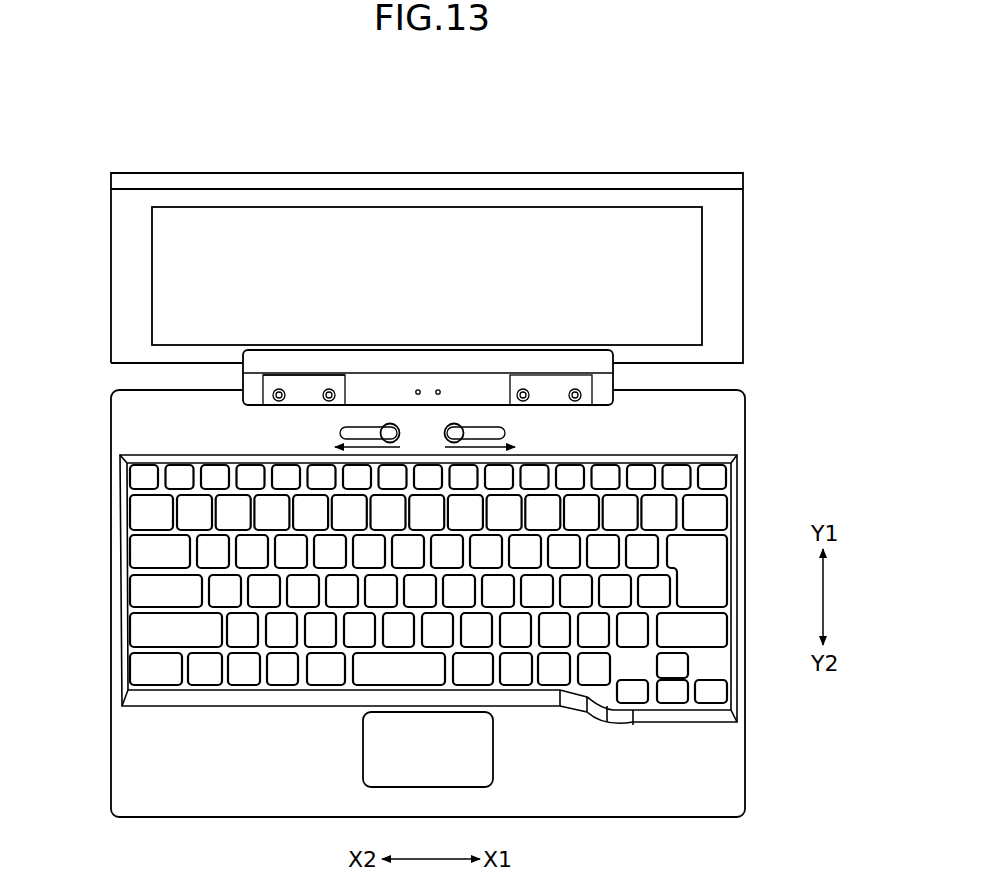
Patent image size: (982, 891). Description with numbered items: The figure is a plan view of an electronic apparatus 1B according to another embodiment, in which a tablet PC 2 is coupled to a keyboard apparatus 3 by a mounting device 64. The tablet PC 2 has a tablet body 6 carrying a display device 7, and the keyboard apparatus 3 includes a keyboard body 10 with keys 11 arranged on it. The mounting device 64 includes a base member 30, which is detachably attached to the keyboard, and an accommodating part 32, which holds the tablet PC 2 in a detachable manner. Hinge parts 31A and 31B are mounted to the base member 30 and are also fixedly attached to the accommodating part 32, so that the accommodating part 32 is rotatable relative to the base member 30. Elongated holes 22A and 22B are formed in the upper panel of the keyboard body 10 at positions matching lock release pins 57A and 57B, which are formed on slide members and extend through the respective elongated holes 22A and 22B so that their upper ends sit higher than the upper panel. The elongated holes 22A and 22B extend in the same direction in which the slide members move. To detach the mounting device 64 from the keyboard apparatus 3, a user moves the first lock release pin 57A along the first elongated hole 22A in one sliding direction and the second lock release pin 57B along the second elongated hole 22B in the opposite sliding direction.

The electronic apparatus 1B is at (80, 88).
The tablet PC 2 is at (756, 208).
The keyboard apparatus 3 is at (757, 737).
The tablet body 6 is at (725, 259).
The display device 7 is at (615, 240).
The keyboard body 10 is at (152, 770).
The keys 11 is at (153, 590).
The first elongated hole 22A is at (503, 430).
The second elongated hole 22B is at (342, 430).
The base member 30 is at (431, 386).
The hinge part 31A is at (555, 376).
The hinge part 31B is at (305, 377).
The accommodating part 32 is at (348, 362).
The first lock release pin 57A is at (454, 433).
The second lock release pin 57B is at (390, 433).
The mounting device 64 is at (620, 383).